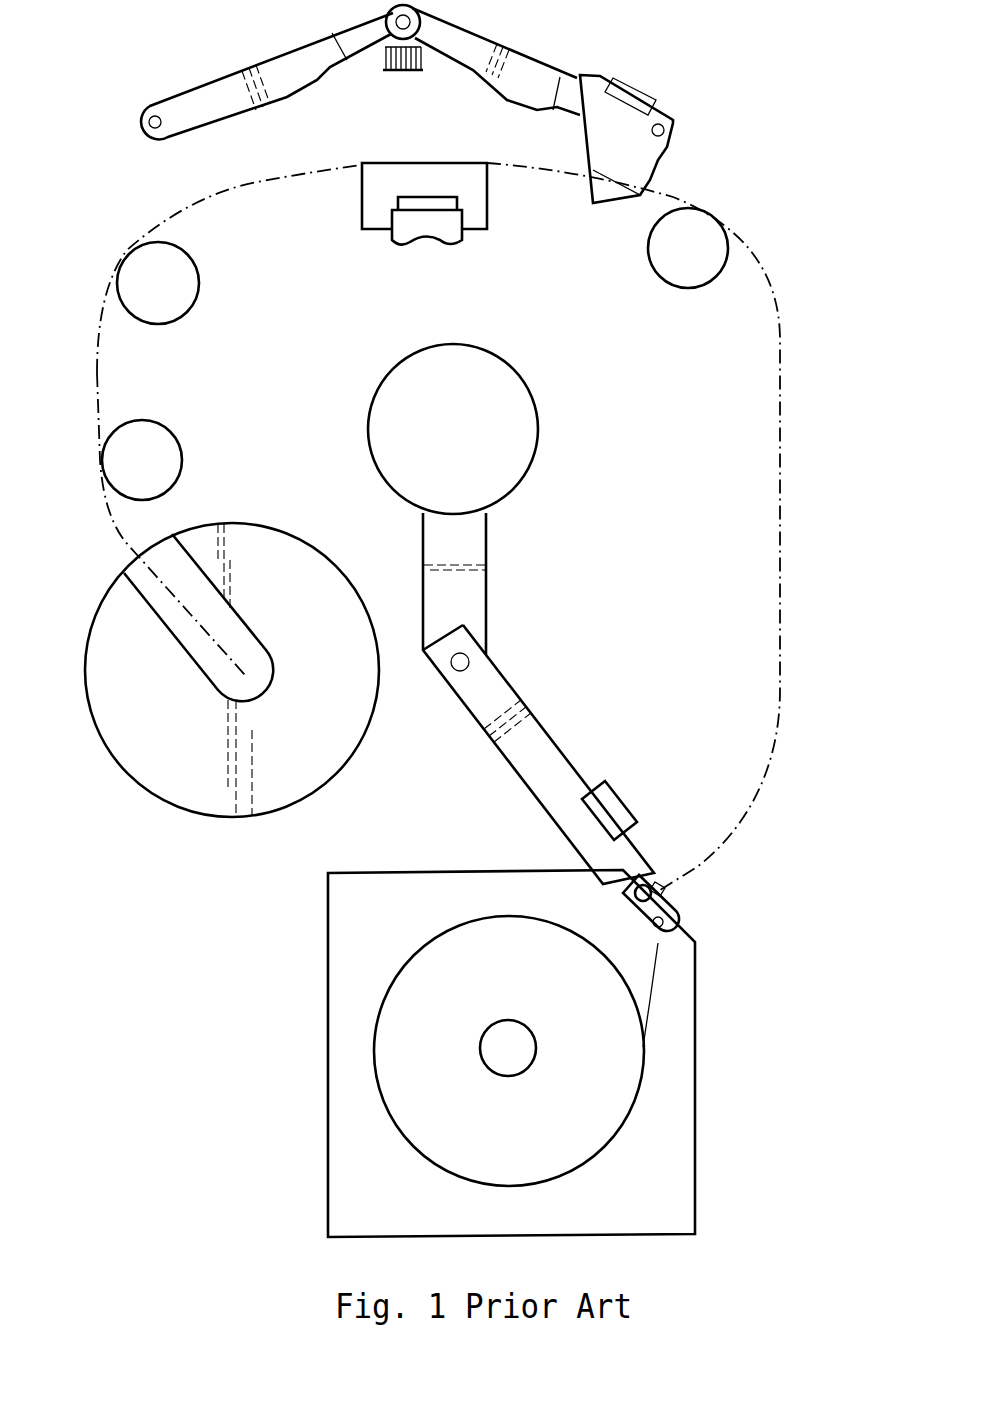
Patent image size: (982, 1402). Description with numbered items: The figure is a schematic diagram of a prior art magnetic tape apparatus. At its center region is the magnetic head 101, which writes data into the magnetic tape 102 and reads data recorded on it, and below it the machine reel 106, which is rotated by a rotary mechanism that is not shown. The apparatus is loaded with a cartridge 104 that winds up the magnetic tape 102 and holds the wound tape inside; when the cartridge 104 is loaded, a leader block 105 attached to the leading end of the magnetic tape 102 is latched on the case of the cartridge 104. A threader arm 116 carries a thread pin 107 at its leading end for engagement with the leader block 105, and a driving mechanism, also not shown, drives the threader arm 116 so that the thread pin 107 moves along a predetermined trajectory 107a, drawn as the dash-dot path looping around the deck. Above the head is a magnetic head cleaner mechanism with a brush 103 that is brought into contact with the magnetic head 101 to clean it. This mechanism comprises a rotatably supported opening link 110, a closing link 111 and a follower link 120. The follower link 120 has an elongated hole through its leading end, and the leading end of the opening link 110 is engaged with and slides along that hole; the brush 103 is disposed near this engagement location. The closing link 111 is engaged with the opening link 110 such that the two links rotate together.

The magnetic head 101 is at (405, 232).
The magnetic tape 102 is at (653, 1000).
The brush 103 is at (412, 72).
The cartridge 104 is at (326, 1120).
The leader block 105 is at (680, 911).
The machine reel 106 is at (165, 773).
The thread pin 107 is at (650, 883).
The predetermined trajectory 107a is at (782, 604).
The opening link 110 is at (537, 72).
The closing link 111 is at (608, 188).
The threader arm 116 is at (507, 747).
The follower link 120 is at (277, 58).